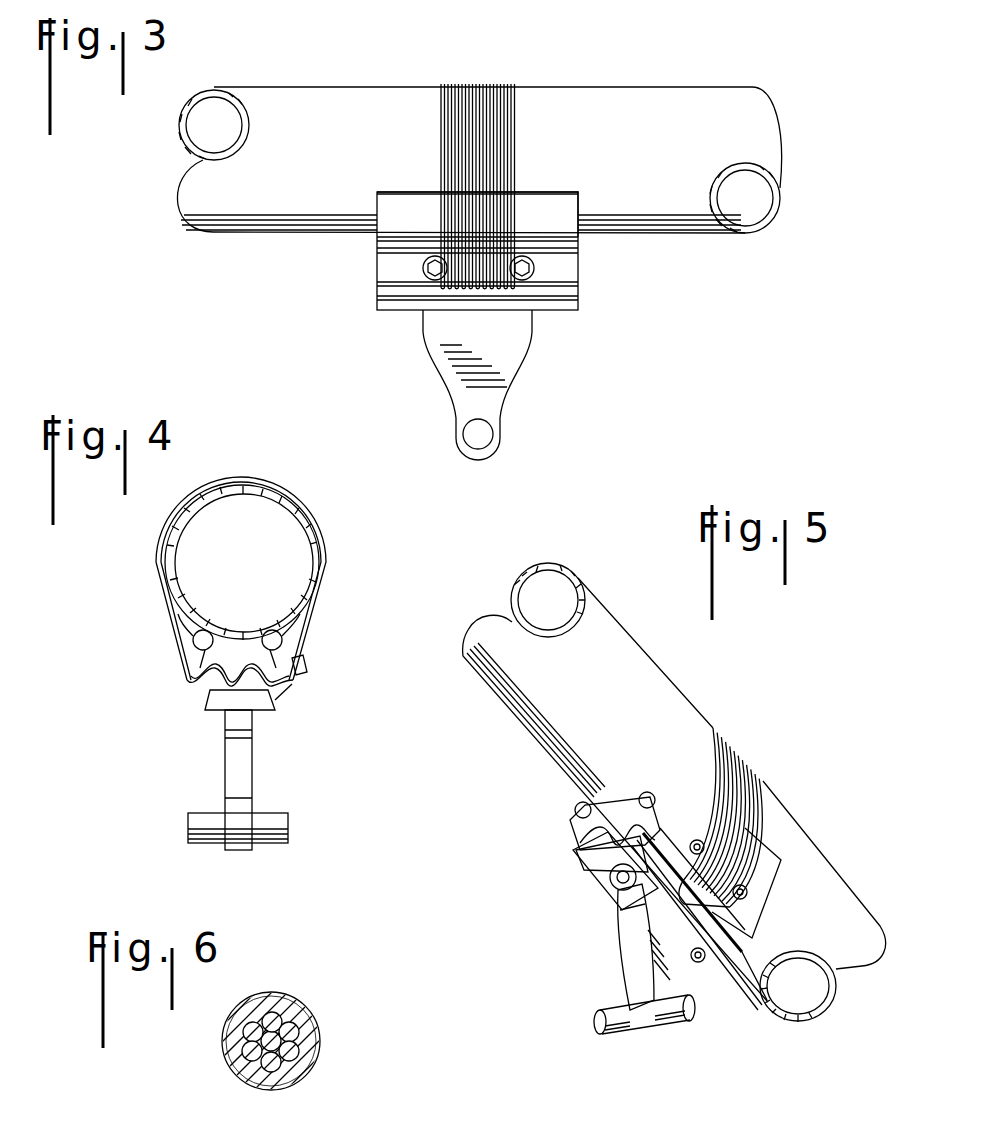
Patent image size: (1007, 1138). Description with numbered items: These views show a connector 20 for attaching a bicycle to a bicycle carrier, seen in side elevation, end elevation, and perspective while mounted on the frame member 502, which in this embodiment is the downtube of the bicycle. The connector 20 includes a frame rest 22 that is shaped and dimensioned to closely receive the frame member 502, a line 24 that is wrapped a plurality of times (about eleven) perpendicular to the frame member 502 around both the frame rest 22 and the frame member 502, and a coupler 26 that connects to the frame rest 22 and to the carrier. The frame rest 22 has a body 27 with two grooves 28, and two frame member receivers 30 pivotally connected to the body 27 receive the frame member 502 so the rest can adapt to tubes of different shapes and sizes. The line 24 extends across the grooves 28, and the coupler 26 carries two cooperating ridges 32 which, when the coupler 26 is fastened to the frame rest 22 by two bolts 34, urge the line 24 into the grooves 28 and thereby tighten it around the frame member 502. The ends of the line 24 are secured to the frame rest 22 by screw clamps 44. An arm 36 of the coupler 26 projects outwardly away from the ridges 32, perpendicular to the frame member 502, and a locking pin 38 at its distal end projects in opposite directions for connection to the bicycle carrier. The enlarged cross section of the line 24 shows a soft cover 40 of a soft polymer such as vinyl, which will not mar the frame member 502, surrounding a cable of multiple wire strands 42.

In FIG. 3, the connector 20 is at (528, 74).
In FIG. 4, the connector 20 is at (308, 482).
In FIG. 5, the connector 20 is at (538, 818).
In FIG. 3, the frame rest 22 is at (366, 263).
In FIG. 4, the frame rest 22 is at (317, 633).
In FIG. 5, the frame rest 22 is at (569, 849).
In FIG. 3, the line 24 is at (443, 88).
In FIG. 4, the line 24 is at (316, 554).
In FIG. 5, the line 24 is at (752, 790).
In FIG. 6, the line 24 is at (312, 988).
In FIG. 3, the coupler 26 is at (394, 344).
In FIG. 4, the coupler 26 is at (203, 756).
In FIG. 5, the coupler 26 is at (603, 968).
In FIG. 3, the body 27 is at (397, 266).
In FIG. 4, the body 27 is at (274, 684).
In FIG. 4, the groove 28 is at (232, 684).
In FIG. 3, the frame member receiver 30 is at (553, 222).
In FIG. 4, the frame member receiver 30 is at (192, 628).
In FIG. 5, the frame member receiver 30 is at (615, 805).
In FIG. 4, the ridge 32 is at (242, 690).
In FIG. 5, the bolt 34 is at (609, 880).
In FIG. 3, the arm 36 is at (493, 389).
In FIG. 4, the arm 36 is at (241, 784).
In FIG. 5, the arm 36 is at (637, 960).
In FIG. 3, the locking pin 38 is at (483, 432).
In FIG. 4, the locking pin 38 is at (282, 826).
In FIG. 5, the locking pin 38 is at (662, 1012).
In FIG. 6, the soft cover 40 is at (310, 1042).
In FIG. 6, the wire strand 42 is at (290, 1056).
In FIG. 3, the screw clamp 44 is at (525, 278).
In FIG. 4, the screw clamp 44 is at (308, 667).
In FIG. 5, the screw clamp 44 is at (718, 869).
In FIG. 3, the frame member 502 is at (626, 103).
In FIG. 4, the frame member 502 is at (194, 524).
In FIG. 5, the frame member 502 is at (655, 686).